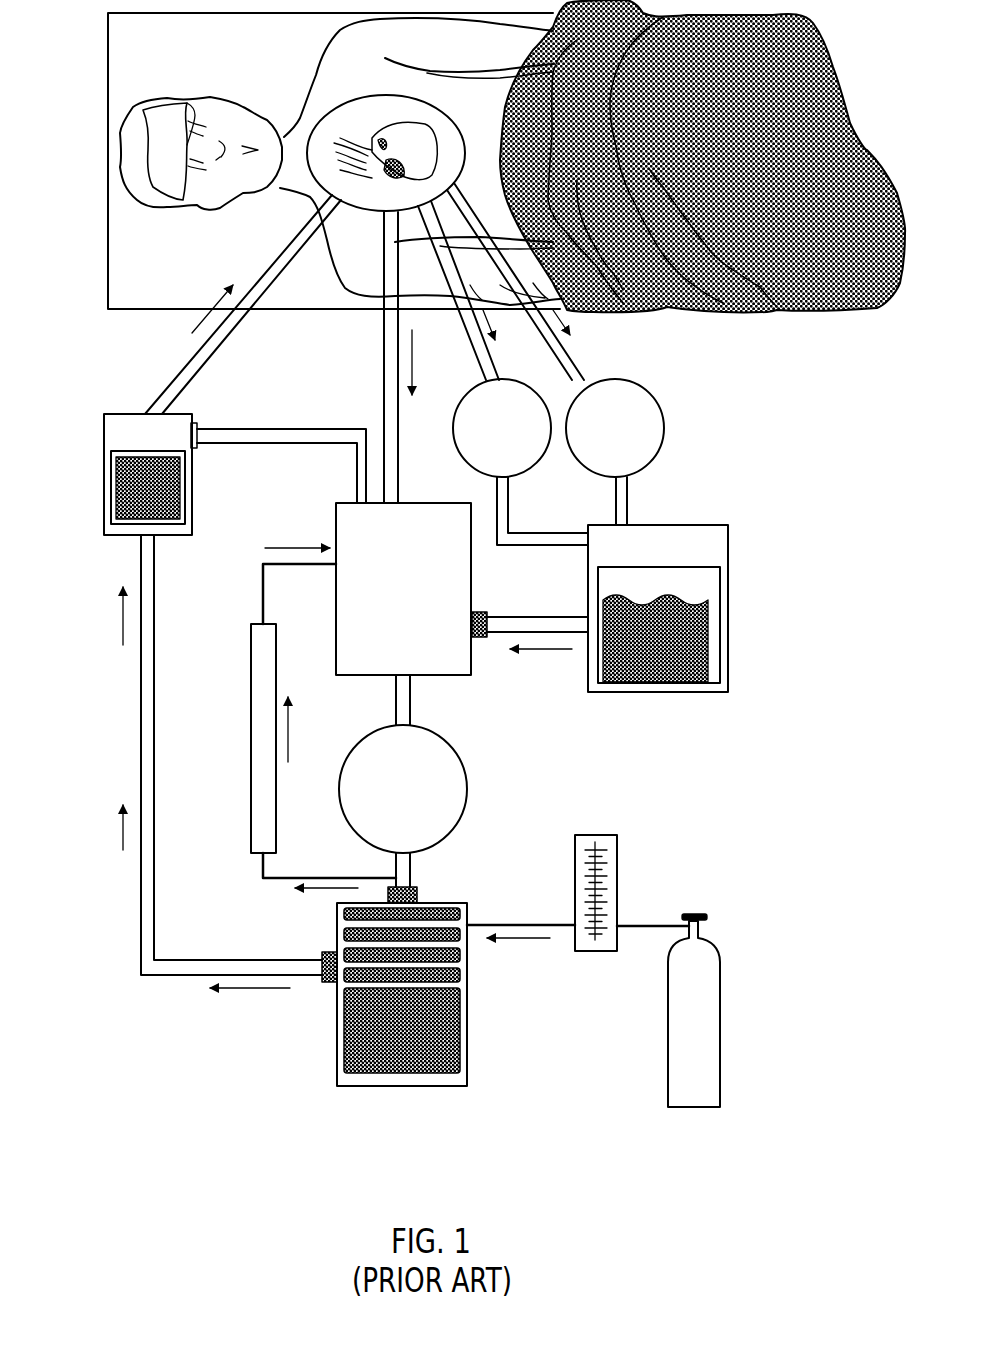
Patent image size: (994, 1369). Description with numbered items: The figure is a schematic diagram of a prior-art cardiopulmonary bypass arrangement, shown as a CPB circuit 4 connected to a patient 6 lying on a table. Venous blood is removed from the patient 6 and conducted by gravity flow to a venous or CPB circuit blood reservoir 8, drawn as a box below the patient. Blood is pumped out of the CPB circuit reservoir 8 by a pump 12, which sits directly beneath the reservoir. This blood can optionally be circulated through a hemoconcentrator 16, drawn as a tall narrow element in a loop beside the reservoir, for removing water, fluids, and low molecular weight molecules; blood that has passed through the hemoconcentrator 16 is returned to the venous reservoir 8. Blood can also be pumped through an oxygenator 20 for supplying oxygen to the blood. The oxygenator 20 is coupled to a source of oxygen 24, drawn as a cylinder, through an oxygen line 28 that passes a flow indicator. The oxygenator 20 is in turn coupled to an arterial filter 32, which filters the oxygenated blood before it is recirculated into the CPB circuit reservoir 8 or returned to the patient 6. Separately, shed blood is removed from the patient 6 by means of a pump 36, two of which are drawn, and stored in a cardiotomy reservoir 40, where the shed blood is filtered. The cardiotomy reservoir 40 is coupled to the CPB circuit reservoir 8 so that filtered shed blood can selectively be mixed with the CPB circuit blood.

The CPB circuit 4 is at (78, 752).
The patient 6 is at (122, 162).
The venous or CPB circuit blood reservoir 8 is at (457, 668).
The pump 12 is at (455, 795).
The hemoconcentrator 16 is at (265, 840).
The oxygenator 20 is at (337, 1088).
The source of oxygen 24 is at (710, 1026).
The oxygen line 28 is at (510, 924).
The arterial filter 32 is at (110, 522).
The pump 36 is at (536, 462).
The cardiotomy reservoir 40 is at (728, 553).